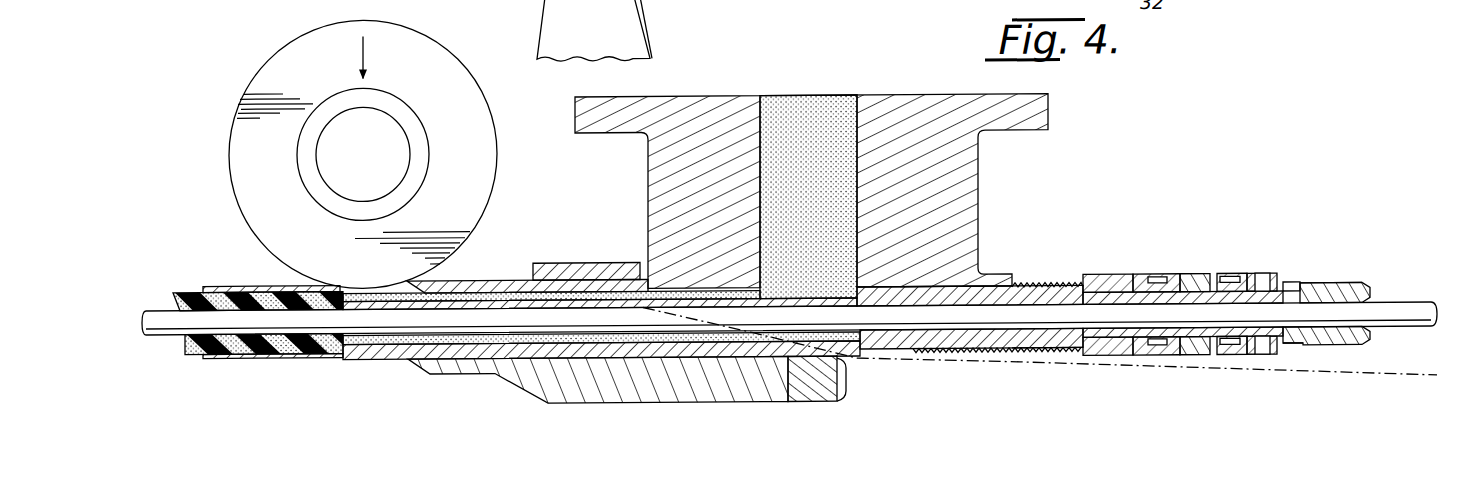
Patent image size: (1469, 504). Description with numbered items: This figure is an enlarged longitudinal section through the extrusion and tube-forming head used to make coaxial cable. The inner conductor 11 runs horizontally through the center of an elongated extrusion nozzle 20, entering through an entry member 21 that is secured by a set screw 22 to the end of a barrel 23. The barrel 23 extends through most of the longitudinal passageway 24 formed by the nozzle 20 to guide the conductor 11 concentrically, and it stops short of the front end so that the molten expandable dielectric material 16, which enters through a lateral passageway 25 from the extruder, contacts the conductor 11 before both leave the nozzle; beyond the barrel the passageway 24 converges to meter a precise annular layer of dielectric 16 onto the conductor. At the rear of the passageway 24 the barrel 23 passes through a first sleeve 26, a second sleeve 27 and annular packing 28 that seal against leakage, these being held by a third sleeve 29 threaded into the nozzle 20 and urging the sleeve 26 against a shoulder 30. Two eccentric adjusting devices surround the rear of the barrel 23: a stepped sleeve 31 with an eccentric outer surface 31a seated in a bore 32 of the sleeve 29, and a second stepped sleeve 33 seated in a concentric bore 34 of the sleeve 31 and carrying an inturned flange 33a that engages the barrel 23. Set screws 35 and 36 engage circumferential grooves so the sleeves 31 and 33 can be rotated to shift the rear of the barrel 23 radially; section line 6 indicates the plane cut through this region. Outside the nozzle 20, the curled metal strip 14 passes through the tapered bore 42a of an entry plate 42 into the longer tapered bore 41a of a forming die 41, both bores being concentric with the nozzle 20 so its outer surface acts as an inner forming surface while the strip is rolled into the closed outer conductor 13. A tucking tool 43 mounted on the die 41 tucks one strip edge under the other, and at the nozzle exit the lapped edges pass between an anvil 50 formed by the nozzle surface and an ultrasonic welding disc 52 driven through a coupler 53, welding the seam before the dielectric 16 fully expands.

The section line 6- 6 is at (1133, 300).
The inner conductor 11 is at (1395, 311).
The outer conductor 13 is at (232, 356).
The metal strip 14 is at (1384, 378).
The expandable dielectric material 16 is at (779, 100).
The extrusion nozzle 20 is at (871, 354).
The entry member 21 is at (1376, 290).
The set screw 22 is at (1321, 292).
The barrel 23 is at (1300, 356).
The longitudinal passageway 24 is at (626, 350).
The lateral passageway 25 is at (858, 102).
The first sleeve 26 is at (911, 356).
The second sleeve 27 is at (966, 364).
The annular packing 28 is at (984, 288).
The third sleeve 29 is at (1040, 364).
The shoulder 30 is at (906, 296).
The stepped sleeve 31 is at (1215, 364).
The eccentric outer surface 31a is at (1170, 298).
The bore 32 is at (1158, 362).
The second stepped sleeve 33 is at (1262, 290).
The inturned flange 33a is at (1255, 364).
The concentric bore 34 is at (1218, 362).
The set screw 35 is at (1152, 288).
The set screw 36 is at (1228, 288).
The forming die 41 is at (652, 406).
The tapered bore 41a is at (543, 356).
The entry plate 42 is at (796, 407).
The tapered bore 42a is at (844, 396).
The tucking tool 43 is at (584, 266).
The anvil 50 is at (348, 288).
The disc 52 is at (325, 44).
The coupler 53 is at (402, 122).